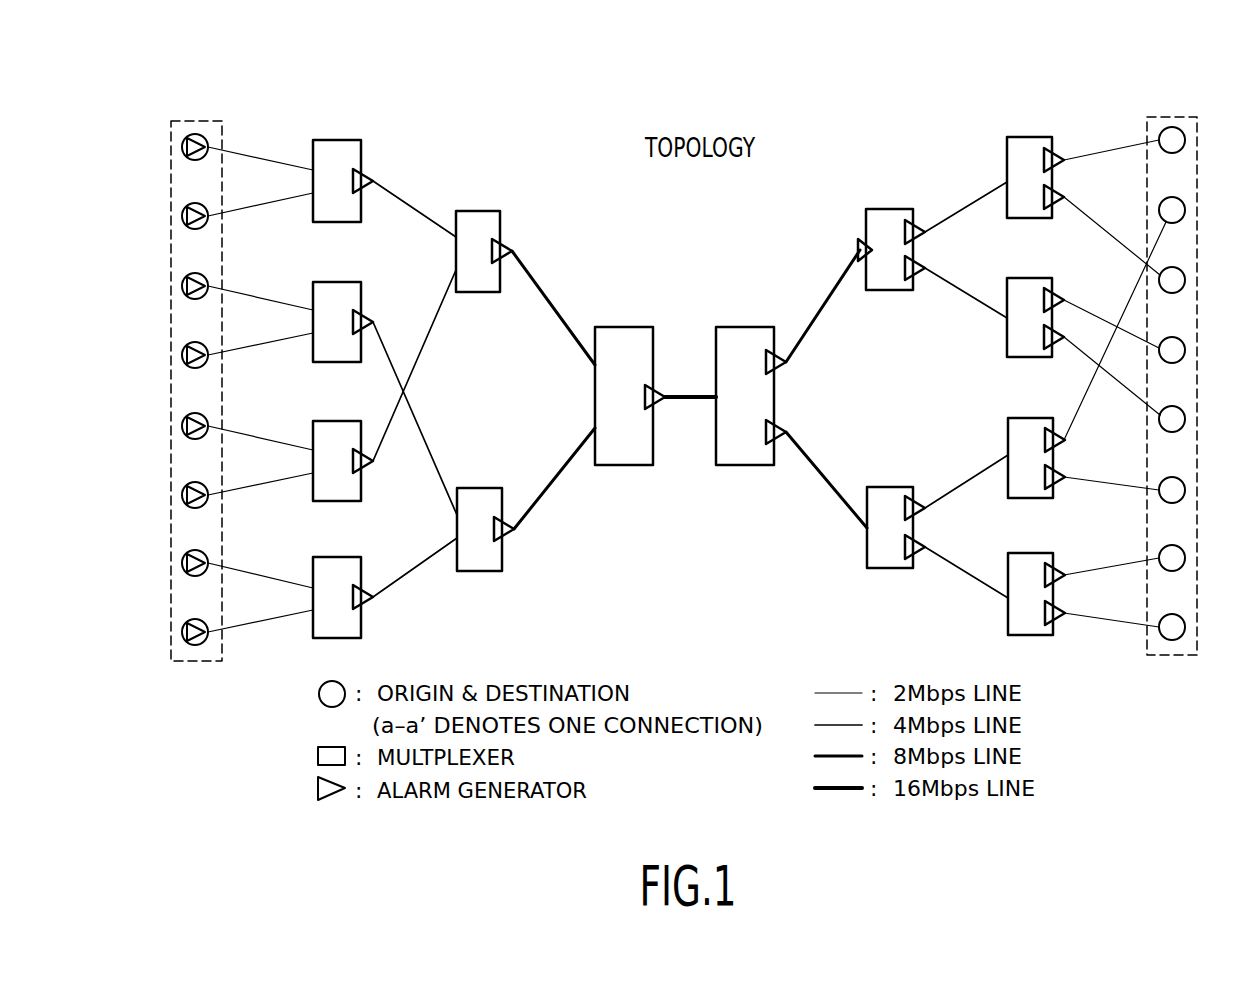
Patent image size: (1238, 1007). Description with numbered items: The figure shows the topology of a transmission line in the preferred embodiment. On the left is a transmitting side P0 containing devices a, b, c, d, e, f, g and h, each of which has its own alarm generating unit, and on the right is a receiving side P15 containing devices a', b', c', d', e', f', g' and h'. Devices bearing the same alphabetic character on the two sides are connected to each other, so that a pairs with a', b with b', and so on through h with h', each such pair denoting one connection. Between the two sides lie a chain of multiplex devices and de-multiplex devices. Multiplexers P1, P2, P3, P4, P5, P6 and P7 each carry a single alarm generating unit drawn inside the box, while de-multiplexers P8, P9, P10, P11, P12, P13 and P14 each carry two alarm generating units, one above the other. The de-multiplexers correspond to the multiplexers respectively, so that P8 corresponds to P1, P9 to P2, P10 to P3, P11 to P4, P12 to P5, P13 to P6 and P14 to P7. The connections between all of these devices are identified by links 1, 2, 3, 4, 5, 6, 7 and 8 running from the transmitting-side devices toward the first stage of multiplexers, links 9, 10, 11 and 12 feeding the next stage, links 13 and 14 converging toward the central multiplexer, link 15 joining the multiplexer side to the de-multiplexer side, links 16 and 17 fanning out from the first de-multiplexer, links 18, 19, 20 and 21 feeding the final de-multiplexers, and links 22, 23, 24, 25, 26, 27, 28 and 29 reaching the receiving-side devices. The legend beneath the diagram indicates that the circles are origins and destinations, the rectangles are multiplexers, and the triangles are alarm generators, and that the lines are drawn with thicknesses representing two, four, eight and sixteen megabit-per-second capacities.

The transmitting side P0 is at (197, 120).
The multiplexer P1 is at (336, 140).
The multiplexer P2 is at (336, 282).
The multiplexer P3 is at (337, 421).
The multiplexer P4 is at (337, 557).
The multiplexer P5 is at (478, 211).
The multiplexer P6 is at (490, 488).
The multiplexer P7 is at (630, 327).
The de-multiplexer P8 is at (752, 327).
The de-multiplexer P9 is at (893, 209).
The de-multiplexer P10 is at (893, 487).
The de-multiplexer P11 is at (1033, 137).
The de-multiplexer P12 is at (1033, 278).
The de-multiplexer P13 is at (1033, 418).
The de-multiplexer P14 is at (1033, 553).
The receiving side P15 is at (1178, 117).
The link 1 is at (258, 158).
The link 2 is at (258, 204).
The link 3 is at (263, 298).
The link 4 is at (258, 344).
The link 5 is at (272, 440).
The link 6 is at (255, 485).
The link 7 is at (272, 578).
The link 8 is at (257, 621).
The link 9 is at (398, 198).
The link 10 is at (387, 354).
The link 11 is at (432, 326).
The link 12 is at (405, 574).
The link 13 is at (542, 289).
The link 14 is at (553, 481).
The link 15 is at (695, 395).
The link 16 is at (828, 295).
The link 17 is at (830, 484).
The link 18 is at (953, 214).
The link 19 is at (972, 296).
The link 20 is at (955, 489).
The link 21 is at (970, 575).
The link 22 is at (1118, 148).
The link 23 is at (1107, 231).
The link 24 is at (1126, 297).
The link 25 is at (1122, 330).
The link 26 is at (1112, 378).
The link 27 is at (1110, 482).
The link 28 is at (1110, 567).
The link 29 is at (1100, 619).